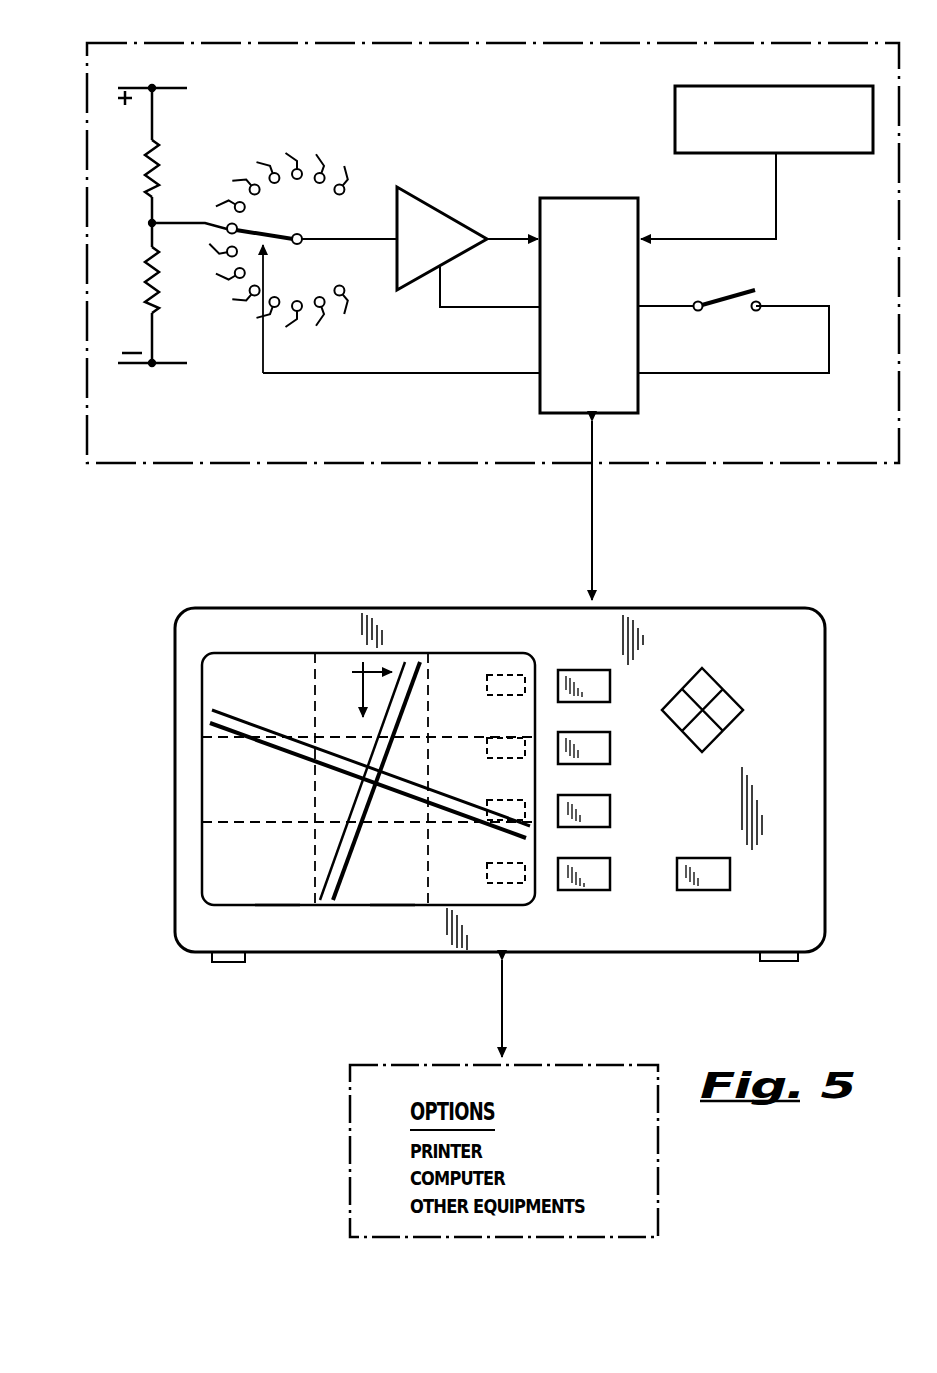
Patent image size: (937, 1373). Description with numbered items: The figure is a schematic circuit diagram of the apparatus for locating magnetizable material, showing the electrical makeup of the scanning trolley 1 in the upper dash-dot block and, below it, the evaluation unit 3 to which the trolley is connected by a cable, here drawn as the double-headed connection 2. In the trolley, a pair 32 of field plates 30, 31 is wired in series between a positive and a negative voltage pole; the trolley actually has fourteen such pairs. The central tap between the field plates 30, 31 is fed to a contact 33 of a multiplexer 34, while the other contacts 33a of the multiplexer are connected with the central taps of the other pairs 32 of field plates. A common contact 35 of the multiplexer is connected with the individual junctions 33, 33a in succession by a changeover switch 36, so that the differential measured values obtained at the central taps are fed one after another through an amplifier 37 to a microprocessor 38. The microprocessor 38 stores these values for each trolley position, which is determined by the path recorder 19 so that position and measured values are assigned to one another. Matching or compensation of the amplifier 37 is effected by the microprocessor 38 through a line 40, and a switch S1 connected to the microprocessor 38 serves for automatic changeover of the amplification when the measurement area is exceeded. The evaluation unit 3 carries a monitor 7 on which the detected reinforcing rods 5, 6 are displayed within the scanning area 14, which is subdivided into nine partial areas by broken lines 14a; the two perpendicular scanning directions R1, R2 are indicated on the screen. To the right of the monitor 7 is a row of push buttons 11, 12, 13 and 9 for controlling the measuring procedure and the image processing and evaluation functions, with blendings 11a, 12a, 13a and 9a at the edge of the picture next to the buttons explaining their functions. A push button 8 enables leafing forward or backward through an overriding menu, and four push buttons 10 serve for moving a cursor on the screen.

The scanning trolley 1 is at (768, 40).
The connection 2 is at (595, 520).
The evaluation unit 3 is at (765, 603).
The steel reinforcing rod 5 is at (288, 748).
The steel reinforcing rod 6 is at (345, 858).
The monitor 7 is at (262, 668).
The push button 8 is at (730, 881).
The push button 9 is at (596, 890).
The blending 9a is at (487, 871).
The push buttons 10 is at (737, 698).
The push button 11 is at (608, 688).
The blending 11a is at (498, 674).
The push button 12 is at (608, 755).
The blending 12a is at (490, 736).
The push button 13 is at (608, 811).
The blending 13a is at (503, 806).
The scanning area 14 is at (275, 892).
The broken lines 14a is at (315, 852).
The path recorder 19 is at (675, 108).
The field plate 30 is at (147, 170).
The field plate 31 is at (145, 283).
The pair of field plates 32 is at (117, 226).
The contact 33 is at (228, 225).
The other contacts 33a is at (280, 163).
The multiplexer 34 is at (270, 226).
The common contact 35 is at (301, 233).
The changeover switch 36 is at (278, 242).
The amplifier 37 is at (428, 216).
The microprocessor 38 is at (580, 212).
The line 40 is at (468, 309).
The switch S1 is at (725, 292).
The scanning direction R1 is at (362, 690).
The scanning direction R2 is at (373, 668).